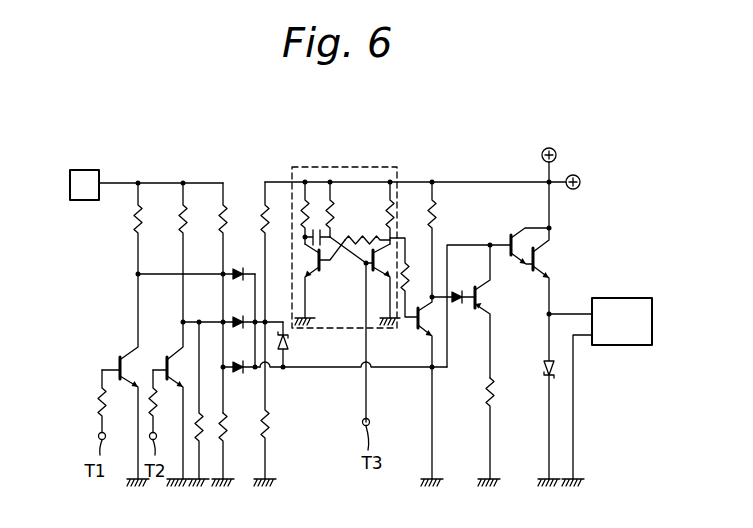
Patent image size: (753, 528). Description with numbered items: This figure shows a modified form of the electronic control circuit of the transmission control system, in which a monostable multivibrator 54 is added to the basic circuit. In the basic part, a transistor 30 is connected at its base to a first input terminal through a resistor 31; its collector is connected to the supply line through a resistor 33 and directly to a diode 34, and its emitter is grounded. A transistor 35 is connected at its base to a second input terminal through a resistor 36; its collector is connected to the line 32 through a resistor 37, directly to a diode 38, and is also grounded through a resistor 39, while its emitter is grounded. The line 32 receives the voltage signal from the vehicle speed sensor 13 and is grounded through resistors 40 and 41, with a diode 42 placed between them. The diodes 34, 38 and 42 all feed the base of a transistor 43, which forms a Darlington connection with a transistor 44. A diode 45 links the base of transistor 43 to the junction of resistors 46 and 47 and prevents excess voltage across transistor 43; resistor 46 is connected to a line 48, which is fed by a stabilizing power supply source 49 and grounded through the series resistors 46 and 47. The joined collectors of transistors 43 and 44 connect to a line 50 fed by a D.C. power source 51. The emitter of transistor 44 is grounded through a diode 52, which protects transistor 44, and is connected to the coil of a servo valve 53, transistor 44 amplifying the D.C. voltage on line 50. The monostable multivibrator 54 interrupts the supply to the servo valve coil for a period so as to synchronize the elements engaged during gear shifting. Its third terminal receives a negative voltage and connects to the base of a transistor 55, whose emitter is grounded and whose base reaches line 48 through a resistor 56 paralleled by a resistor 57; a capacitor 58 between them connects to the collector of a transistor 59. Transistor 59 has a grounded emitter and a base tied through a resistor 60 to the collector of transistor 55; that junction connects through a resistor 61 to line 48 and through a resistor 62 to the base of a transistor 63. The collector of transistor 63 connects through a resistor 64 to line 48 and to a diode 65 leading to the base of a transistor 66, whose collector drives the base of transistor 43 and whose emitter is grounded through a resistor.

The vehicle speed sensor 13 is at (80, 170).
The transistor 30 is at (118, 358).
The resistor 31 is at (97, 397).
The line 32 is at (160, 183).
The resistor 33 is at (133, 225).
The diode 34 is at (240, 266).
The transistor 35 is at (167, 355).
The resistor 36 is at (136, 345).
The resistor 37 is at (178, 225).
The diode 38 is at (236, 318).
The resistor 39 is at (200, 442).
The resistor 40 is at (225, 205).
The resistor 41 is at (224, 442).
The diode 42 is at (242, 374).
The transistor 43 is at (508, 240).
The transistor 44 is at (542, 274).
The diode 45 is at (290, 343).
The resistor 46 is at (266, 205).
The resistor 47 is at (492, 400).
The line 48 is at (488, 182).
The stabilizing power supply source 49 is at (580, 182).
The line 50 is at (556, 222).
The power source 51 is at (555, 152).
The diode 52 is at (543, 368).
The servo valve 53 is at (652, 330).
The monostable multivibrator 54 is at (347, 160).
The transistor 55 is at (370, 278).
The resistor 56 is at (340, 203).
The resistor 57 is at (303, 205).
The capacitor 58 is at (323, 228).
The transistor 59 is at (327, 272).
The resistor 60 is at (372, 237).
The resistor 61 is at (392, 200).
The resistor 62 is at (406, 262).
The transistor 63 is at (415, 330).
The resistor 64 is at (437, 212).
The diode 65 is at (465, 310).
The transistor 66 is at (460, 290).